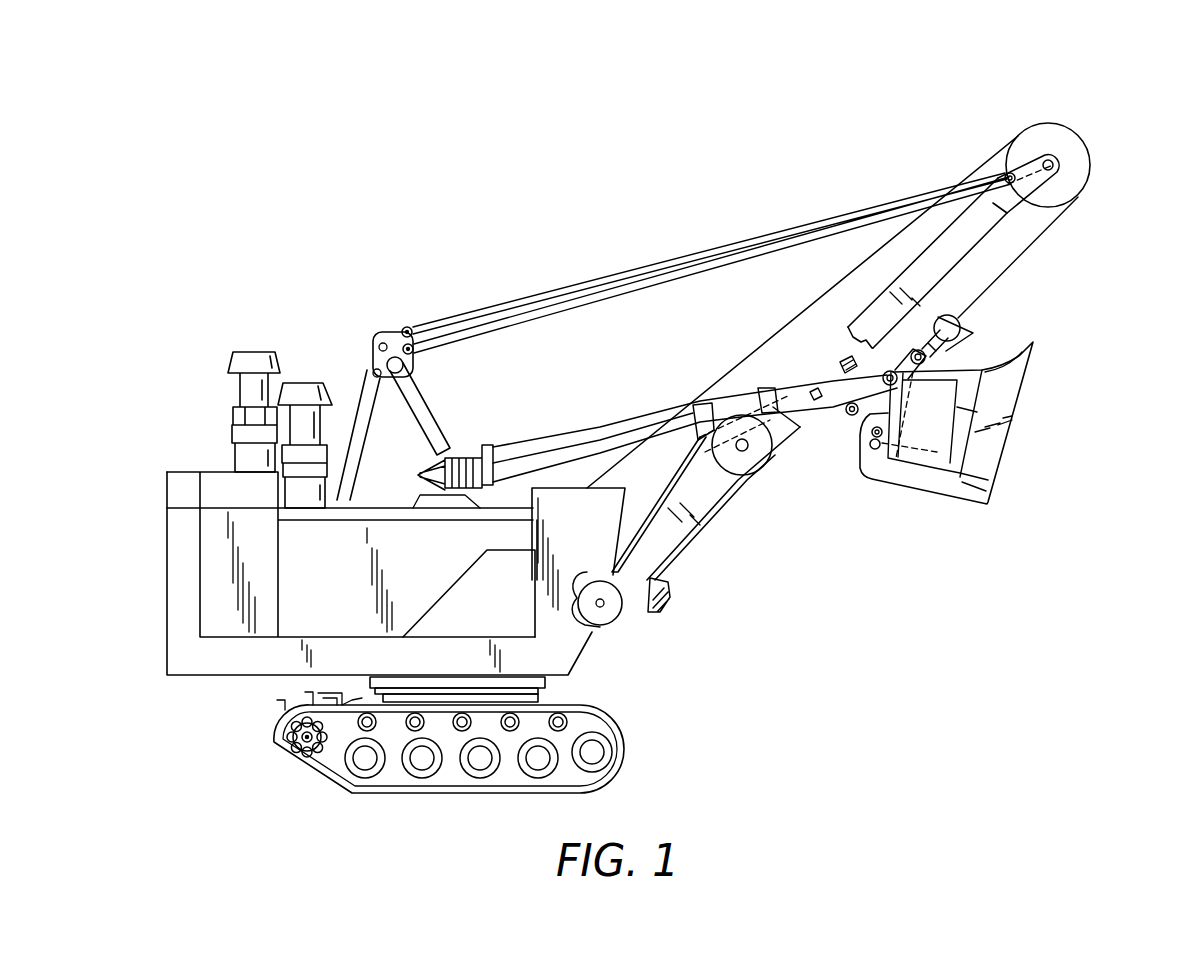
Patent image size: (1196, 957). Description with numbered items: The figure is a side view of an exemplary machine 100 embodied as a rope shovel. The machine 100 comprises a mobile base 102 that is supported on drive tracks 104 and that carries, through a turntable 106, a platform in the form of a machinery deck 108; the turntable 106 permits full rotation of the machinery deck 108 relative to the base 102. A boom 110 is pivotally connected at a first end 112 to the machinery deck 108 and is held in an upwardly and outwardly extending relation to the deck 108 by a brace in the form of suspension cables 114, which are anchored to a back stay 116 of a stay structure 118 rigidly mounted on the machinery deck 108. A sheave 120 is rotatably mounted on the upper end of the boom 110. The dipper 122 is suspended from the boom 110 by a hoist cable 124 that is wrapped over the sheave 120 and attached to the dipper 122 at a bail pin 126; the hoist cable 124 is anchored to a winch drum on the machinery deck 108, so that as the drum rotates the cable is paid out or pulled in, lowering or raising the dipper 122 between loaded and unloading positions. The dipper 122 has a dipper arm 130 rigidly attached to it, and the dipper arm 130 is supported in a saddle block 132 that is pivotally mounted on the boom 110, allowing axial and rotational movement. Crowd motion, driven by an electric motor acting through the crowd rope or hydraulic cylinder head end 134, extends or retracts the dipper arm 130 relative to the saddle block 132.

The machine 100 is at (1092, 92).
The mobile base 102 is at (330, 758).
The drive tracks 104 is at (622, 742).
The turntable 106 is at (548, 683).
The machinery deck 108 is at (502, 615).
The boom 110 is at (943, 268).
The first end 112 is at (608, 606).
The suspension cables 114 is at (641, 272).
The back stay 116 is at (363, 398).
The stay structure 118 is at (418, 402).
The sheave 120 is at (1077, 158).
The dipper 122 is at (1027, 393).
The hoist cable 124 is at (1033, 245).
The bail pin 126 is at (940, 360).
The dipper arm 130 is at (818, 408).
The saddle block 132 is at (712, 420).
The hydraulic cylinder head end 134 is at (463, 450).